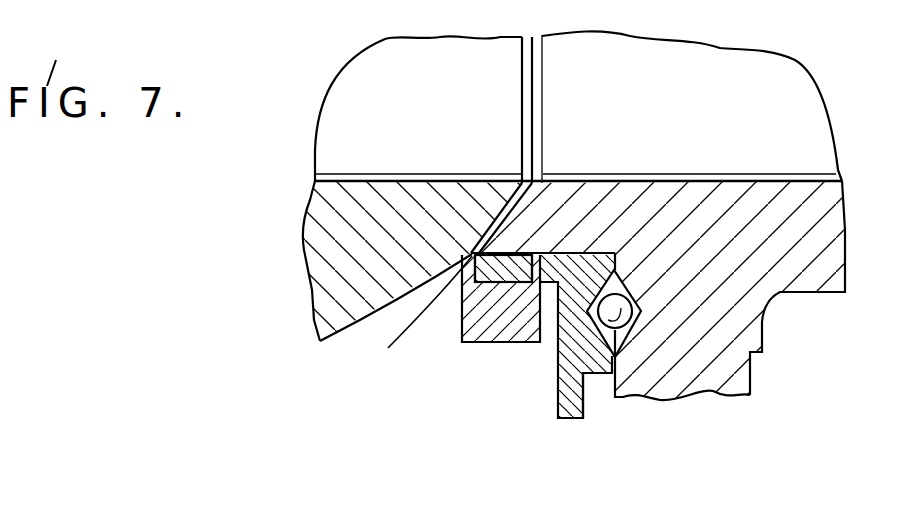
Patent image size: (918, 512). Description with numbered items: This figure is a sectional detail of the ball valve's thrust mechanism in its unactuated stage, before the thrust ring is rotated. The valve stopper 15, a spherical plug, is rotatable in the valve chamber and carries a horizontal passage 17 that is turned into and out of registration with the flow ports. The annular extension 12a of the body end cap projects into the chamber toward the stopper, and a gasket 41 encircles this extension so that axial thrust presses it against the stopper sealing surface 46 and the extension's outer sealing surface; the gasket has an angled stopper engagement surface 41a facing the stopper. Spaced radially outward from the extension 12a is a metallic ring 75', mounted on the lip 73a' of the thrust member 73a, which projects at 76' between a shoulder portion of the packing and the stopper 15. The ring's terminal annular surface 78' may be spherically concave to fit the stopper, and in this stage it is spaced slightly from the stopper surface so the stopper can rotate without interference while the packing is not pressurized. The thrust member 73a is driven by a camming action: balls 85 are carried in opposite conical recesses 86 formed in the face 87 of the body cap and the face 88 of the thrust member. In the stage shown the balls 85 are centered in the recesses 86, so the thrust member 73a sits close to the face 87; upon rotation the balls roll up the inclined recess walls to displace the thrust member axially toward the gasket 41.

The annular extension 12a is at (602, 183).
The valve stopper 15 is at (305, 222).
The horizontal passage 17 is at (334, 176).
The gasket 41 is at (516, 250).
The angled stopper engagement surface 41a is at (465, 256).
The stopper sealing surface 46 is at (477, 253).
The thrust member 73a is at (521, 350).
The lip 73a' is at (658, 290).
The metallic ring 75' is at (468, 327).
The projection of ring 76' is at (409, 314).
The terminal annular surface 78' is at (351, 297).
The ball 85 is at (624, 316).
The conical recess 86 is at (616, 272).
The face of body cap 87 is at (607, 380).
The face of thrust member 88 is at (615, 360).